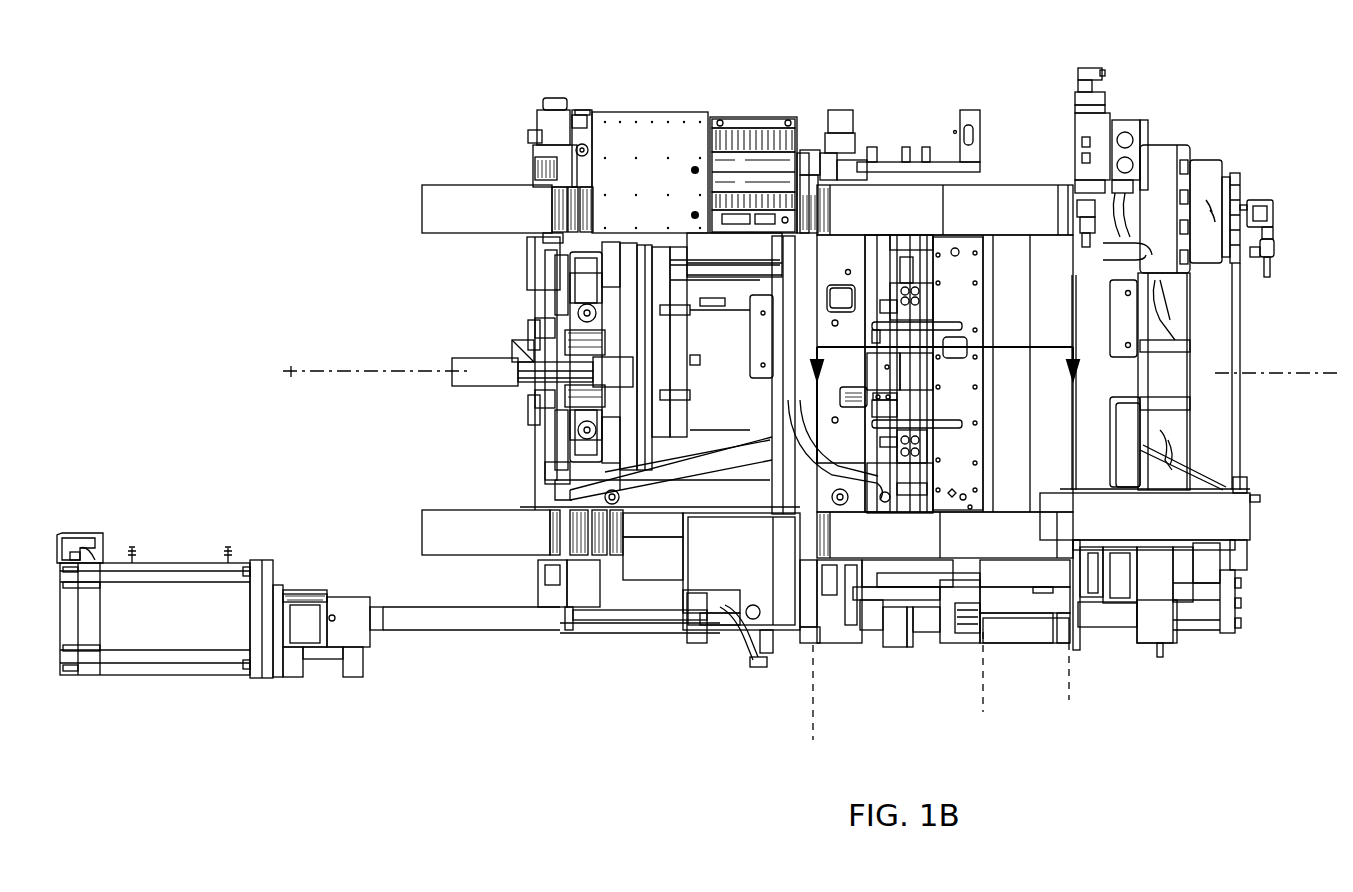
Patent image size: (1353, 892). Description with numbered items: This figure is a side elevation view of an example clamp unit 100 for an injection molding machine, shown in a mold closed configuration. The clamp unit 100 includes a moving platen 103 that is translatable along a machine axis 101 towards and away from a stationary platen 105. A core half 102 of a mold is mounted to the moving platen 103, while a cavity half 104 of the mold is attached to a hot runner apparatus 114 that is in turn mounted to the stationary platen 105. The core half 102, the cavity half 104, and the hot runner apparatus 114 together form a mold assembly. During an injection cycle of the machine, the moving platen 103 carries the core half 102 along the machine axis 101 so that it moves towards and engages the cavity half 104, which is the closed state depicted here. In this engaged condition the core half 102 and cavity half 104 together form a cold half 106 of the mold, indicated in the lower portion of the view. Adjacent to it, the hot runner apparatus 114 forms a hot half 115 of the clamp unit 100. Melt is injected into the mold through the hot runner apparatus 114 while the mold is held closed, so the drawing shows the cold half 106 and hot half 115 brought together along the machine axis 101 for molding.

The clamp unit 100 is at (745, 54).
The machine axis 101 is at (291, 378).
The core half 102 is at (847, 447).
The moving platen 103 is at (782, 350).
The cavity half 104 is at (964, 438).
The stationary platen 105 is at (1210, 337).
The cold half 106 is at (983, 678).
The hot runner apparatus 114 is at (1055, 275).
The hot half 115 is at (1069, 677).